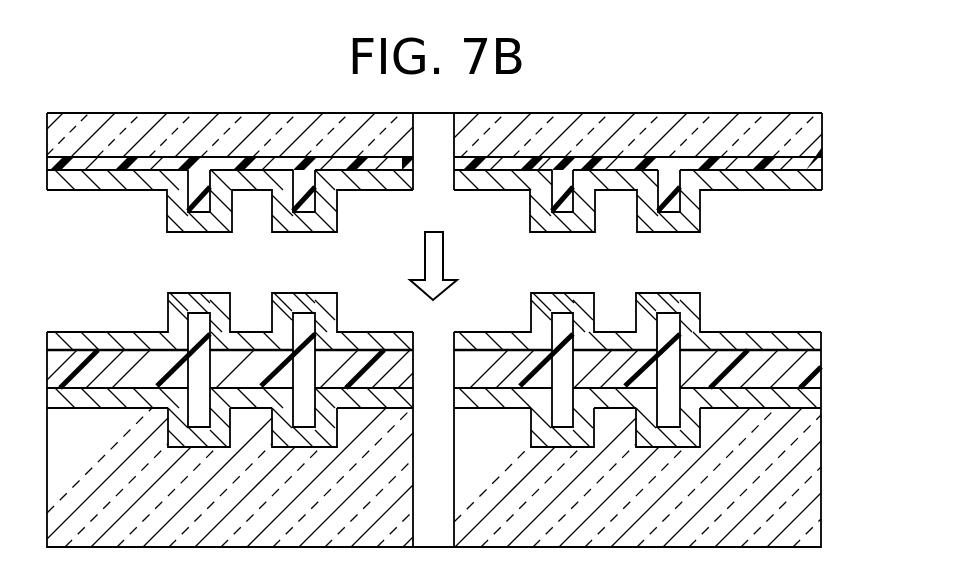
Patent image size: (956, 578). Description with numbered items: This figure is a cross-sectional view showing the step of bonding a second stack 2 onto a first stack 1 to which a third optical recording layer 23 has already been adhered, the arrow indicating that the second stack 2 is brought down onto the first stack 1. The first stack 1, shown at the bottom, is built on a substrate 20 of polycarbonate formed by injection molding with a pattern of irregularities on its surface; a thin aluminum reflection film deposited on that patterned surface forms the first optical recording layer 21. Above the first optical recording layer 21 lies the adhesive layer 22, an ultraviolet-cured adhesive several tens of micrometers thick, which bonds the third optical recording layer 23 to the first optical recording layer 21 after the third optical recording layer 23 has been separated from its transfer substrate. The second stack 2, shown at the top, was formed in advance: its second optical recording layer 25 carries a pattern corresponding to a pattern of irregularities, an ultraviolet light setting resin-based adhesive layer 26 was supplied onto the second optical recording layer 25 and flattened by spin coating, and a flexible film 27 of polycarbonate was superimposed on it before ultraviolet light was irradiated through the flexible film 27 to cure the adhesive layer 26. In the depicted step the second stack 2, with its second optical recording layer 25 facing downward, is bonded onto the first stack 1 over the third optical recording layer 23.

The first stack 1 is at (481, 420).
The second stack 2 is at (480, 171).
The substrate 20 is at (875, 395).
The first optical recording layer 21 is at (793, 404).
The adhesive layer 22 is at (790, 368).
The third optical recording layer 23 is at (795, 339).
The second optical recording layer 25 is at (462, 197).
The adhesive layer 26 is at (805, 162).
The flexible film 27 is at (792, 132).